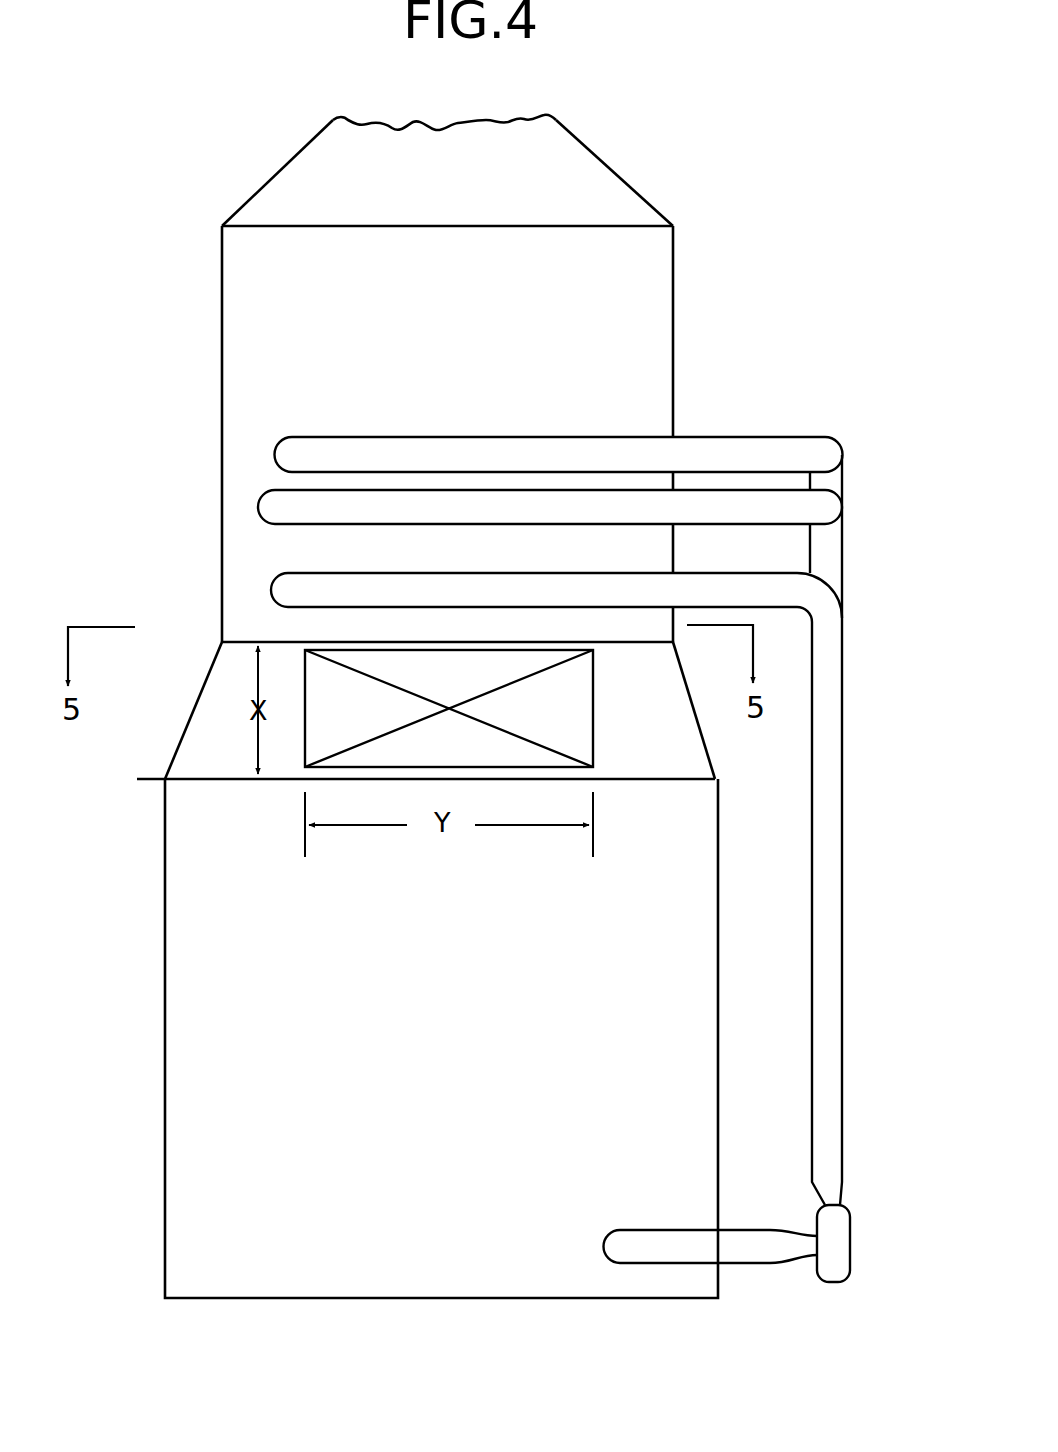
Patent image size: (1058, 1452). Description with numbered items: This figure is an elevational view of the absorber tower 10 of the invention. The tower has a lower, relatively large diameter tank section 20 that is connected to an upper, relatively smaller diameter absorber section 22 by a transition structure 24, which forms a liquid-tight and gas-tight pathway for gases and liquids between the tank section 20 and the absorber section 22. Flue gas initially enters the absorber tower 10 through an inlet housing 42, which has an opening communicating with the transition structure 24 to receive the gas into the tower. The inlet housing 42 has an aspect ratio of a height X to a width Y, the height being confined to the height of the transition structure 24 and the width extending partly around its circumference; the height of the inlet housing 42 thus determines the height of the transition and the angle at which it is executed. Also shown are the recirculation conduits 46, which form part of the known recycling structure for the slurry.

The absorber tower 10 is at (696, 316).
The absorber section 22 is at (224, 446).
The transition structure 24 is at (217, 738).
The inlet housing 42 is at (577, 727).
The tank section 20 is at (165, 1083).
The recirculation conduits 46 is at (827, 1077).